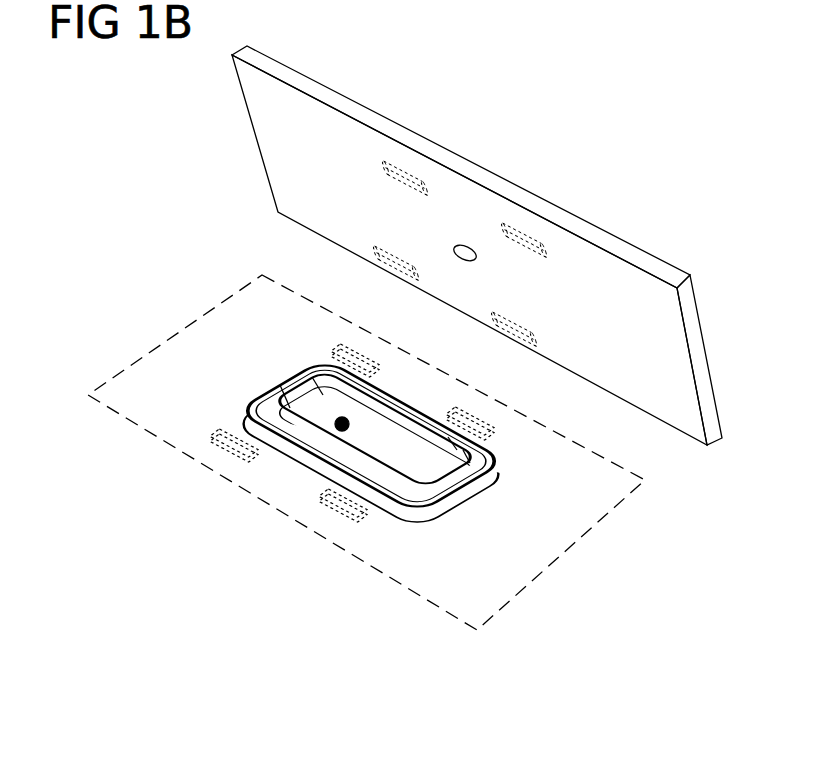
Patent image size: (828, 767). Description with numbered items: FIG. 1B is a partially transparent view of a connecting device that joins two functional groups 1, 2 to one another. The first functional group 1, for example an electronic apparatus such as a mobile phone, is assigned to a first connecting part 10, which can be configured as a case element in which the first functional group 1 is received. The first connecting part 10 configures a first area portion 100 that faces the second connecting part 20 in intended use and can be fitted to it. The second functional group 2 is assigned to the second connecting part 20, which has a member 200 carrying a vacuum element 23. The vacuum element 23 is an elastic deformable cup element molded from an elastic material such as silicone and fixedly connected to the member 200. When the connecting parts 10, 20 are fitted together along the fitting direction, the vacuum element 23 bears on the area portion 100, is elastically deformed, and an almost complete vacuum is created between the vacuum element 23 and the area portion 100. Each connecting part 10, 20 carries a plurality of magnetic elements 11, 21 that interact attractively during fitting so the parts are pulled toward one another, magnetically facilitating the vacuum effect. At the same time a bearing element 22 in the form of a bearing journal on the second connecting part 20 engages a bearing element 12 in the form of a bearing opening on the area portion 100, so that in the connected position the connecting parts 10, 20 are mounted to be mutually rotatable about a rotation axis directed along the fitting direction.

The first functional group 1 is at (663, 240).
The first connecting part 10 is at (552, 212).
The magnetic elements 11 is at (394, 163).
The bearing element 12 is at (462, 176).
The first area portion 100 is at (516, 193).
The second functional group 2 is at (576, 581).
The second connecting part 20 is at (366, 483).
The magnetic elements 21 is at (352, 352).
The bearing element 22 is at (336, 427).
The vacuum element 23 is at (338, 465).
The member 200 is at (427, 603).